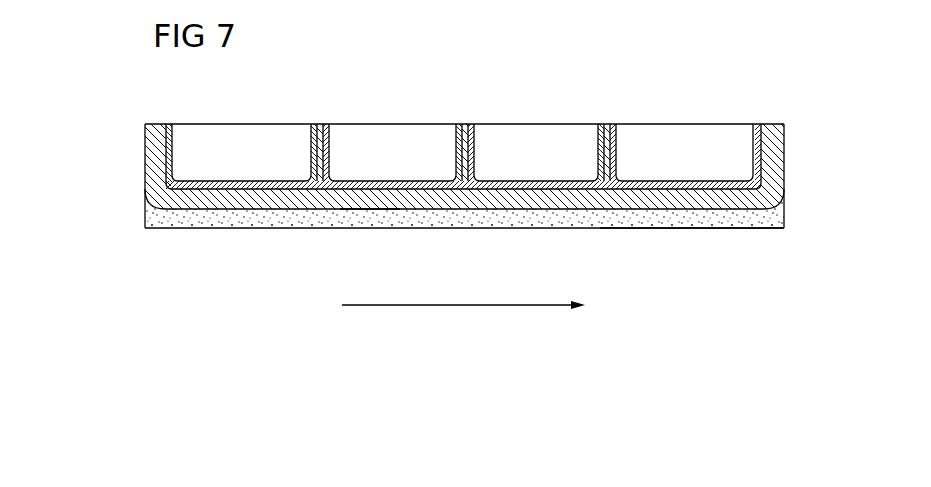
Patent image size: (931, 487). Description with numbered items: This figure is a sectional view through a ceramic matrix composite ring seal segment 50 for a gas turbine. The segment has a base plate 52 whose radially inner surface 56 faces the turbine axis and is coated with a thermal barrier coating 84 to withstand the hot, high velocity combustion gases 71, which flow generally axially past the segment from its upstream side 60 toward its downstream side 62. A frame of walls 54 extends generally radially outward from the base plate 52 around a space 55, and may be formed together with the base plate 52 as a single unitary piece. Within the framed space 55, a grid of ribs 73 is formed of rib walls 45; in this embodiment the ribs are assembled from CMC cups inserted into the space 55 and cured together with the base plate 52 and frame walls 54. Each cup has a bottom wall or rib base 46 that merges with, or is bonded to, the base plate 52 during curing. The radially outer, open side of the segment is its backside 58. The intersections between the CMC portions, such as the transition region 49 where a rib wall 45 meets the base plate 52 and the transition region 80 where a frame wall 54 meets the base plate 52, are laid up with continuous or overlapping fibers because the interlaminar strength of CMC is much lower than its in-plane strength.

The ring seal segment 50 is at (450, 157).
The frame walls 54 is at (155, 146).
The upstream side 60 is at (148, 170).
The transition region 80 is at (160, 207).
The thermal barrier coating 84 is at (681, 227).
The downstream side 62 is at (785, 188).
The base plate 52 is at (275, 200).
The inner surface 56 is at (370, 205).
The transition region 49 is at (175, 182).
The rib base 46 is at (377, 180).
The rib walls 45 is at (456, 149).
The ribs 73 is at (325, 110).
The backside 58 is at (548, 88).
The space 55 is at (680, 152).
The hot gases 71 is at (450, 307).